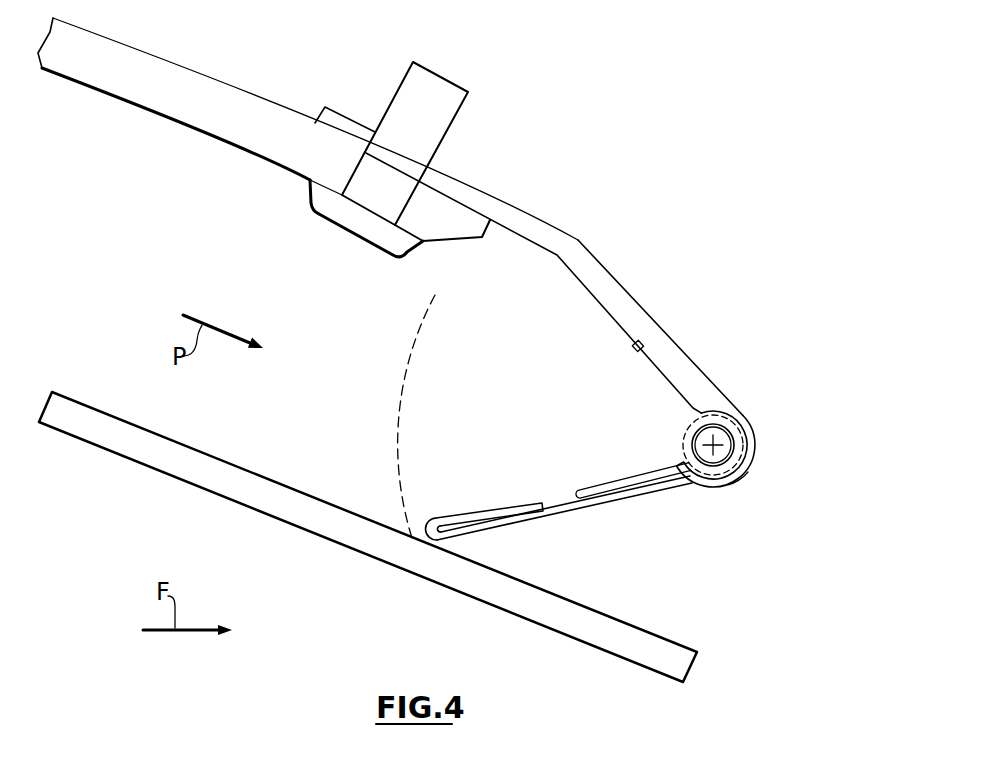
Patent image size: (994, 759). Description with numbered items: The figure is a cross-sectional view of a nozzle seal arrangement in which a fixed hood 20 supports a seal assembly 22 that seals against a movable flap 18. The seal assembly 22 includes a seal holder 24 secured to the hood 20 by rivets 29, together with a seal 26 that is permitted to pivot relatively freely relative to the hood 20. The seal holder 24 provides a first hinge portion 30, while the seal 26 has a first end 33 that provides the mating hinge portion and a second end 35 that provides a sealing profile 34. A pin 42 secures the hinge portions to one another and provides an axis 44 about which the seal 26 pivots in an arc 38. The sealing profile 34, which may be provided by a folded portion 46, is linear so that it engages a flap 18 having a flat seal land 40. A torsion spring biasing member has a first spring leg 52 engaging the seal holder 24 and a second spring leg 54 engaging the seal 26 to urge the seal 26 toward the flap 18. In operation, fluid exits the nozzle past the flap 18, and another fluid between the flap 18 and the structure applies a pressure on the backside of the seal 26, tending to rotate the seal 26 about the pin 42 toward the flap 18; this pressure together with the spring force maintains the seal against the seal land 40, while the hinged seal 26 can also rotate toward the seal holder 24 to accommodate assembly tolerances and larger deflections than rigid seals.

The movable flaps 18 is at (622, 634).
The hood 20 is at (155, 64).
The seal assembly 22 is at (749, 382).
The seal holder 24 is at (538, 235).
The seal 26 is at (581, 522).
The rivets 29 is at (404, 143).
The first hinge portion 30 is at (755, 466).
The first end 33 is at (694, 499).
The sealing profile 34 is at (413, 540).
The second end 35 is at (432, 503).
The arc 38 is at (406, 352).
The seal land 40 is at (444, 534).
The pin 42 is at (736, 485).
The axis 44 is at (737, 444).
The folded portion 46 is at (500, 510).
The first spring leg 52 is at (640, 350).
The second spring leg 54 is at (601, 490).